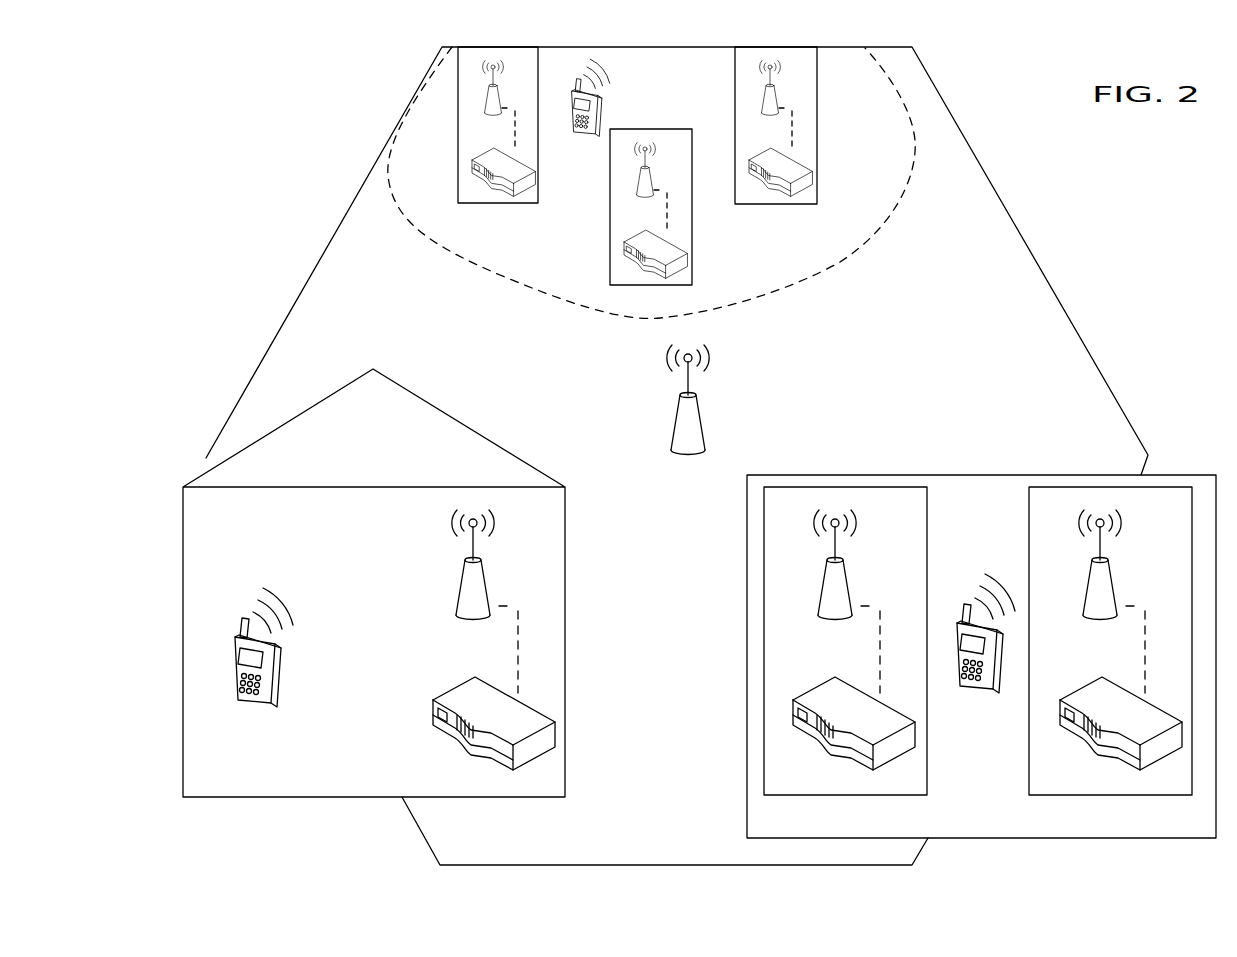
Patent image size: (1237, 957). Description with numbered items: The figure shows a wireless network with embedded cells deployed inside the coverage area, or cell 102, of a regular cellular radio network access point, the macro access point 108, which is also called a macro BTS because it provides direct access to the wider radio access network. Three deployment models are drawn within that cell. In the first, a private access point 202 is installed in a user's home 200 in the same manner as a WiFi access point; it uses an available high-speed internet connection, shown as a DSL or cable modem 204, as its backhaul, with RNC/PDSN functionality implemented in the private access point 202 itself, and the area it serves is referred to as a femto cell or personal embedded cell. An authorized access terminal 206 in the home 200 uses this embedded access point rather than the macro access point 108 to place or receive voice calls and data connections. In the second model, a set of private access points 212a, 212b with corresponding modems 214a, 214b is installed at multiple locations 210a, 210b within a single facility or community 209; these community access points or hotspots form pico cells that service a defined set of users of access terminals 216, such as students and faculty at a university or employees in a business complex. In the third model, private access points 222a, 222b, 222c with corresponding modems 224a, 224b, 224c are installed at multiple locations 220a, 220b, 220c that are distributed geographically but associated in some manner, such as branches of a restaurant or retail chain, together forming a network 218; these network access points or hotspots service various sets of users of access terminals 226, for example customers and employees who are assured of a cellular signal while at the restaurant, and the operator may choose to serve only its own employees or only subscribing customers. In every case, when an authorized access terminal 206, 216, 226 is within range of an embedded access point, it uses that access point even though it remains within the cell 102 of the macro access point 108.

The cell 102 is at (385, 122).
The macro access point 108 is at (673, 450).
The home 200 is at (315, 797).
The private access point 202 is at (458, 612).
The cable modem 204 is at (491, 732).
The access terminal 206 is at (240, 699).
The facility or community 209 is at (747, 810).
The location 210a is at (885, 797).
The location 210b is at (1120, 797).
The private access point 212a is at (820, 612).
The private access point 212b is at (1085, 612).
The modem 214a is at (851, 732).
The modem 214b is at (1118, 732).
The access terminal 216 is at (962, 688).
The network 218 is at (815, 270).
The location 220a is at (470, 199).
The location 220b is at (685, 283).
The location 220c is at (735, 201).
The private access point 222a is at (490, 114).
The private access point 222b is at (640, 196).
The private access point 222c is at (780, 95).
The modem 224a is at (471, 178).
The modem 224b is at (624, 259).
The modem 224c is at (812, 178).
The access terminal 226 is at (603, 112).